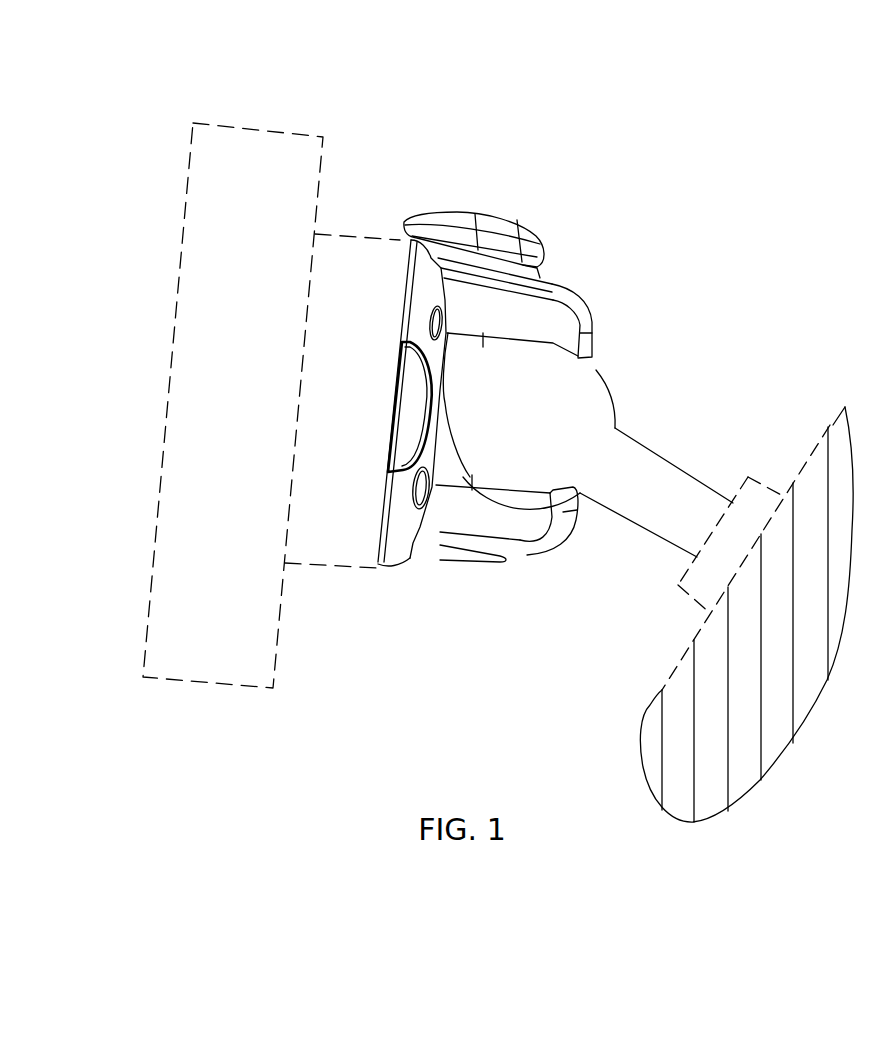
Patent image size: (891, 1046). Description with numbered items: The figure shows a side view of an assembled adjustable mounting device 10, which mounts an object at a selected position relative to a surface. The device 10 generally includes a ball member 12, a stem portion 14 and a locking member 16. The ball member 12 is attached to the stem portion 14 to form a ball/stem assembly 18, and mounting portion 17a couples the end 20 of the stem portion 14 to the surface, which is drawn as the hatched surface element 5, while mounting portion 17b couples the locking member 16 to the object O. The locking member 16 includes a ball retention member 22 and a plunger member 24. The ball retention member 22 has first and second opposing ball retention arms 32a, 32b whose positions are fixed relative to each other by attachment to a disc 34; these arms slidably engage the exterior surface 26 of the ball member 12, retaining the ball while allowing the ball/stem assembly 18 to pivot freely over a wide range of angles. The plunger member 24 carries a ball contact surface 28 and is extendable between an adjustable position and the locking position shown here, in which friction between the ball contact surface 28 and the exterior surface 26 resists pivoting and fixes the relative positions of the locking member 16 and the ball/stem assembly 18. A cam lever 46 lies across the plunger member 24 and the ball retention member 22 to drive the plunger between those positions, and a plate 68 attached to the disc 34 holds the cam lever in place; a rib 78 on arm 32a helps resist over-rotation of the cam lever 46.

The adjustable mounting device 10 is at (737, 157).
The locking member 16 is at (428, 177).
The cam lever 46 is at (497, 228).
The rib 78 is at (537, 272).
The ball retention member 22 is at (422, 287).
The first ball retention arm 32a is at (548, 317).
The second ball retention arm 32b is at (522, 520).
The disc 34 is at (553, 342).
The ball member 12 is at (583, 388).
The exterior surface 26 is at (539, 439).
The ball contact surface 28 is at (448, 408).
The plunger member 24 is at (448, 473).
The plate 68 is at (378, 567).
The mounting portion 17b is at (310, 480).
The object O is at (180, 547).
The ball/stem assembly 18 is at (688, 398).
The stem portion 14 is at (648, 470).
The end 20 is at (722, 507).
The mounting portion 17a is at (693, 592).
The pedal pad 5 is at (834, 425).